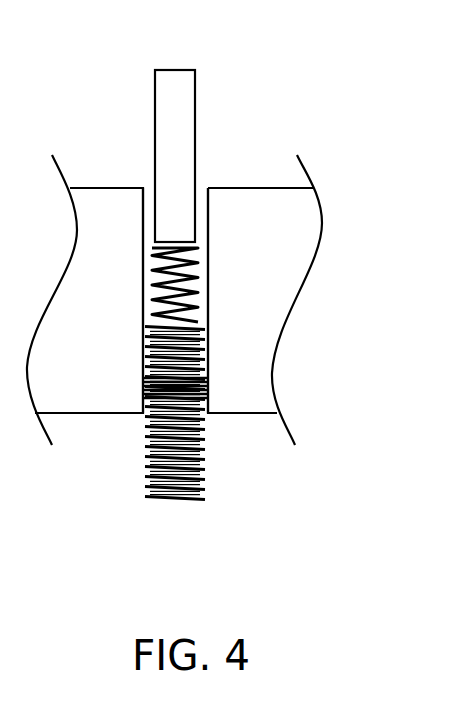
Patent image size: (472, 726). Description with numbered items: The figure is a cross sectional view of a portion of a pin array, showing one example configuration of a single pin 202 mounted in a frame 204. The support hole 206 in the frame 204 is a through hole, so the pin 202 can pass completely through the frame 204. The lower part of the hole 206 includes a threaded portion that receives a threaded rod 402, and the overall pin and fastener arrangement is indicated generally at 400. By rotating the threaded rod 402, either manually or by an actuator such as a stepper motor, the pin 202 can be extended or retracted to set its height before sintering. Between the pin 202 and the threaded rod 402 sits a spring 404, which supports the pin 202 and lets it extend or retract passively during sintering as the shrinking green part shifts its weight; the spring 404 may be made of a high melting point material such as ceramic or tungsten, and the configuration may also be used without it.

The pin 202 is at (175, 70).
The frame 204 is at (110, 360).
The support hole 206 is at (208, 217).
The fastener assembly 400 is at (213, 393).
The threaded rod 402 is at (147, 472).
The spring 404 is at (195, 285).